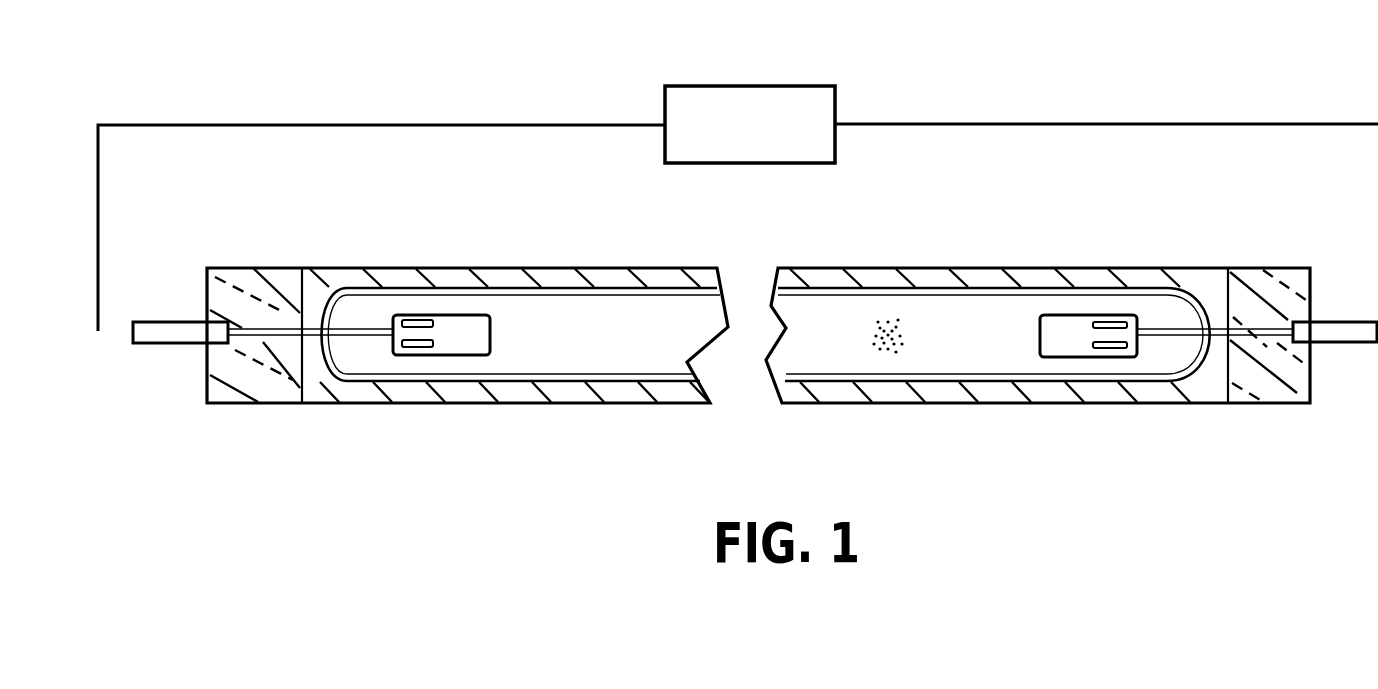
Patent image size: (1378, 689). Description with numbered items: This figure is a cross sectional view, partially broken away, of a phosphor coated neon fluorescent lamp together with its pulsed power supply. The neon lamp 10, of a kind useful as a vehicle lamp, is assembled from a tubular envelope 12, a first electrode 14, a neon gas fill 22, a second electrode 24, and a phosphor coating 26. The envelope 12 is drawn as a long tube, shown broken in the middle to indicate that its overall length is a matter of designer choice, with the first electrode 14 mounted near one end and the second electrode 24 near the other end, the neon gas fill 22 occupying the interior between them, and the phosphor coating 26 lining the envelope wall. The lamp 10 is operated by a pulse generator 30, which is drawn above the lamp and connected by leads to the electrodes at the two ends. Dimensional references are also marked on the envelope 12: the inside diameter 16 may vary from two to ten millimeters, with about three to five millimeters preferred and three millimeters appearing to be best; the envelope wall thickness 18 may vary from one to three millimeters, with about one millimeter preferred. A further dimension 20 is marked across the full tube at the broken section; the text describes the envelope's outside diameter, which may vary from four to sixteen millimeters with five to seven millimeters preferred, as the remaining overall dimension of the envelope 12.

The neon lamp 10 is at (205, 213).
The tubular envelope 12 is at (250, 404).
The first electrode 14 is at (438, 356).
The inside diameter 16 is at (563, 295).
The envelope wall thickness 18 is at (653, 343).
The outer diameter 20 is at (822, 268).
The neon gas fill 22 is at (905, 336).
The second electrode 24 is at (1077, 315).
The phosphor coating 26 is at (863, 292).
The pulse generator 30 is at (740, 86).